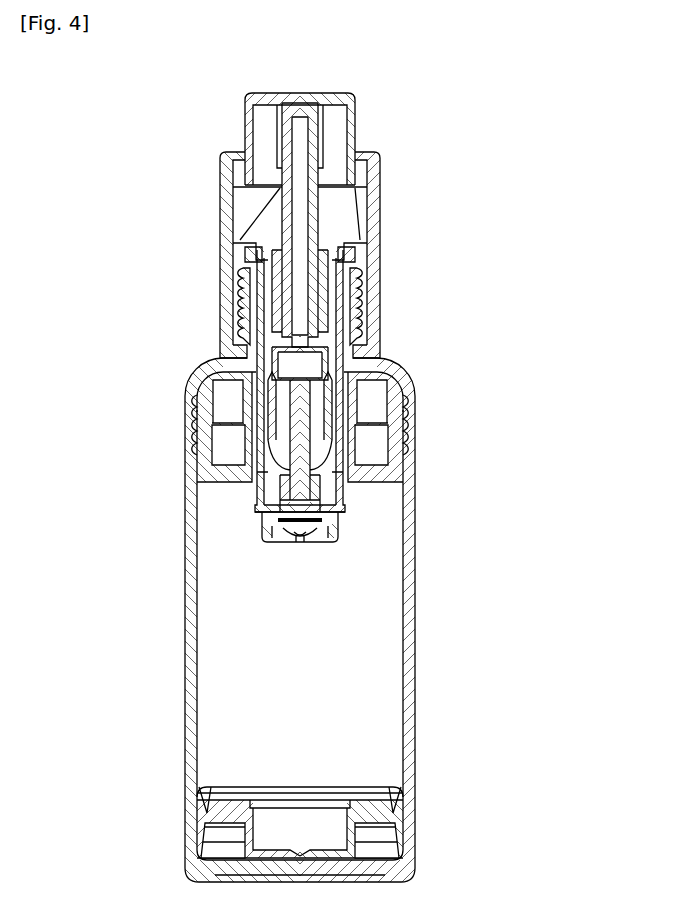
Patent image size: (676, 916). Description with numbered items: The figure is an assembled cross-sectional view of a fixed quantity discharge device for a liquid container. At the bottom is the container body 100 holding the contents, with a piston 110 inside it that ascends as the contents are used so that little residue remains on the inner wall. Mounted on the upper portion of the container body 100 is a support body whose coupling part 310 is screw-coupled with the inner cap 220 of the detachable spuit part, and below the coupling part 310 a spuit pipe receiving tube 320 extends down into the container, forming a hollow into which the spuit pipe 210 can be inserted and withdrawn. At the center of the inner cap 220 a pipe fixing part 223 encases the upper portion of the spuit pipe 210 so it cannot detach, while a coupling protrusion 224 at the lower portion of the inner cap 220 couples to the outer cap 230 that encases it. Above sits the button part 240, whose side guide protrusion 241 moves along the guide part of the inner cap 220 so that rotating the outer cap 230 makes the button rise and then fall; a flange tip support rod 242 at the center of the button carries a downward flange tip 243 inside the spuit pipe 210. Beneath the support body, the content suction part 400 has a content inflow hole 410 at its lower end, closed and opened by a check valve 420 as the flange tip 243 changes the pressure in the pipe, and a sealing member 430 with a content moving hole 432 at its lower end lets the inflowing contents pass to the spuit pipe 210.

The container body 100 is at (410, 662).
The piston 110 is at (397, 817).
The spuit pipe 210 is at (338, 427).
The inner cap 220 is at (355, 332).
The pipe fixing part 223 is at (352, 266).
The coupling protrusion 224 is at (382, 373).
The outer cap 230 is at (362, 298).
The button part 240 is at (352, 103).
The guide protrusion 241 is at (357, 169).
The flange tip support rod 242 is at (283, 206).
The flange tip 243 is at (278, 358).
The coupling part 310 is at (252, 297).
The spuit pipe receiving tube 320 is at (252, 425).
The content suction part 400 is at (249, 527).
The content inflow hole 410 is at (303, 543).
The check valve 420 is at (276, 521).
The sealing member 430 is at (320, 500).
The content moving hole 432 is at (337, 508).